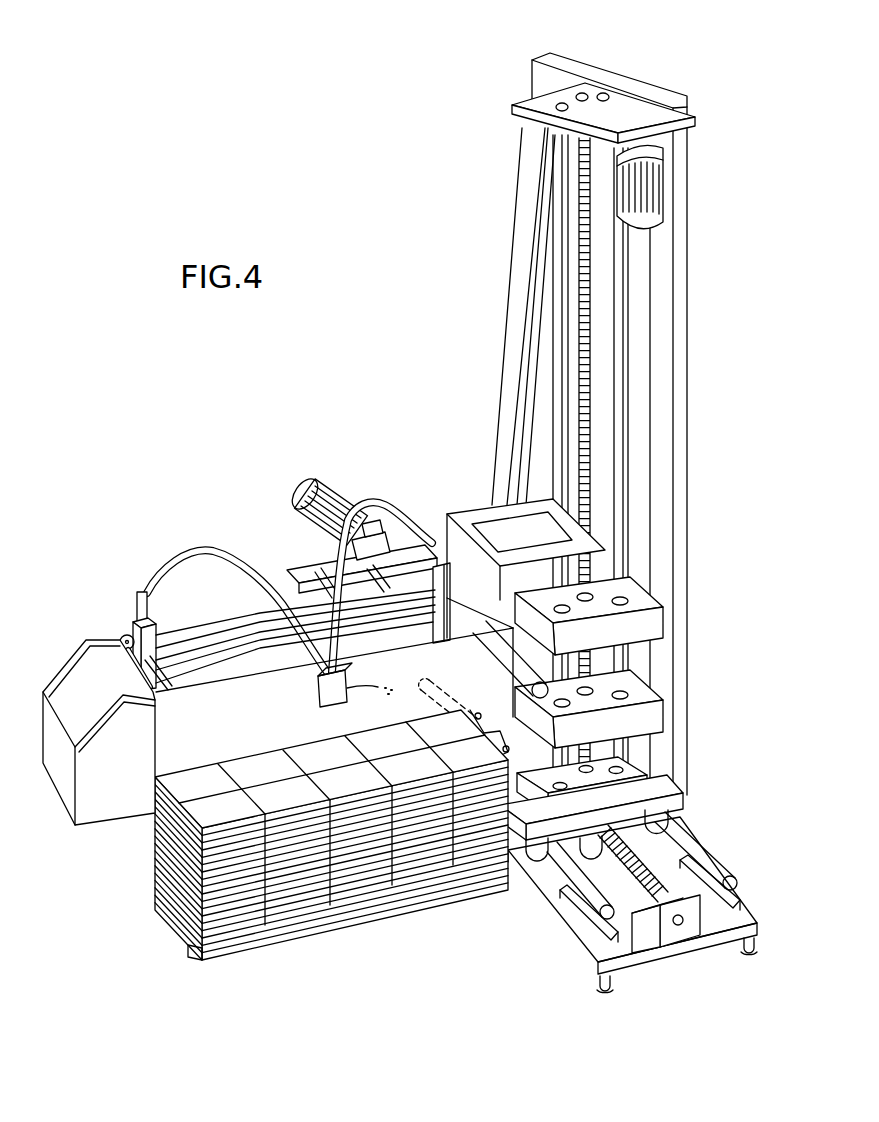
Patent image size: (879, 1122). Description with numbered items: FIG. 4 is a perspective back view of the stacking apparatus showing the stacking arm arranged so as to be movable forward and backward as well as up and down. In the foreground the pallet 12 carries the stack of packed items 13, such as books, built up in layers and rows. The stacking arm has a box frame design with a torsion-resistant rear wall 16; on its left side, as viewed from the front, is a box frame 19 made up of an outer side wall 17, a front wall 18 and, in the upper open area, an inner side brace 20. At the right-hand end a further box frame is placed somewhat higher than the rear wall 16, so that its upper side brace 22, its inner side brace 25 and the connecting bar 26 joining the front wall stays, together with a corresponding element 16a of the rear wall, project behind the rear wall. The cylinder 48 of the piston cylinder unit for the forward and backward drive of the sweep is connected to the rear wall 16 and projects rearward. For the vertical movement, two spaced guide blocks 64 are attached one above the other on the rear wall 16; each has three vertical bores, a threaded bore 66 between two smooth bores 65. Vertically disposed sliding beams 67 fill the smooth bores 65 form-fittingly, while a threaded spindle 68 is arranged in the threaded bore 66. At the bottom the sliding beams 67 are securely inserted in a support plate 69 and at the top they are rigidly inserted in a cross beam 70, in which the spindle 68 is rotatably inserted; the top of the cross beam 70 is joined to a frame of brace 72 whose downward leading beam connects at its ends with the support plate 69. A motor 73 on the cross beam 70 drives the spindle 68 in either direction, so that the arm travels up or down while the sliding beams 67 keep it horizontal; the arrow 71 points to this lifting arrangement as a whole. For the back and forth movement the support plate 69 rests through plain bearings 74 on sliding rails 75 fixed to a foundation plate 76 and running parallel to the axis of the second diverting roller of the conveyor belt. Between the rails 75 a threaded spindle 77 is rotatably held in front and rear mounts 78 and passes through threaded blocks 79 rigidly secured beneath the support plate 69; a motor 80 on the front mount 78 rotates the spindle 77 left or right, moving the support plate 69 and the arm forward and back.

The pallet 12 is at (367, 925).
The stack of packed items 13 is at (300, 900).
The rear wall 16 is at (183, 763).
The element of the rear wall 16a is at (506, 600).
The outer side wall 17 is at (68, 793).
The front wall 18 is at (80, 663).
The box frame 19 is at (50, 640).
The inner side brace 20 is at (115, 648).
The upper side brace 22 is at (568, 528).
The inner side brace 25 is at (476, 518).
The connecting bar 26 is at (503, 510).
The cylinder 48 is at (503, 645).
The guide blocks 64 is at (653, 633).
The smooth bores 65 is at (630, 712).
The threaded bore 66 is at (630, 620).
The sliding beams 67 is at (563, 385).
The threaded spindle 68 is at (590, 300).
The support plate 69 is at (673, 802).
The cross beam 70 is at (697, 120).
The lifting column 71 is at (708, 178).
The brace 72 is at (628, 86).
The motor 73 is at (655, 183).
The plain bearings 74 is at (673, 816).
The sliding rails 75 is at (700, 850).
The foundation plate 76 is at (688, 946).
The threaded spindle 77 is at (626, 965).
The mounts 78 is at (663, 948).
The threaded blocks 79 is at (607, 840).
The motor 80 is at (322, 492).